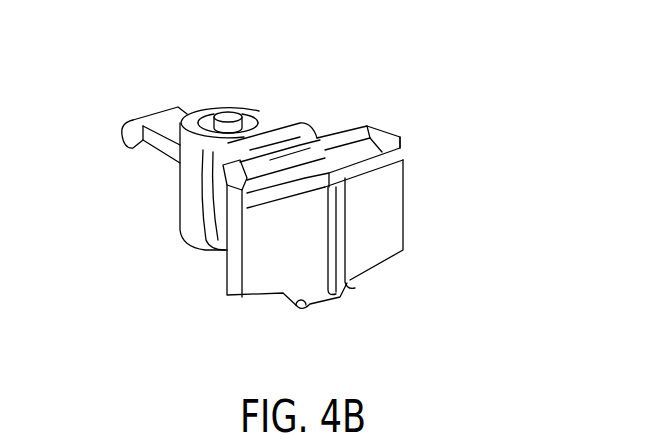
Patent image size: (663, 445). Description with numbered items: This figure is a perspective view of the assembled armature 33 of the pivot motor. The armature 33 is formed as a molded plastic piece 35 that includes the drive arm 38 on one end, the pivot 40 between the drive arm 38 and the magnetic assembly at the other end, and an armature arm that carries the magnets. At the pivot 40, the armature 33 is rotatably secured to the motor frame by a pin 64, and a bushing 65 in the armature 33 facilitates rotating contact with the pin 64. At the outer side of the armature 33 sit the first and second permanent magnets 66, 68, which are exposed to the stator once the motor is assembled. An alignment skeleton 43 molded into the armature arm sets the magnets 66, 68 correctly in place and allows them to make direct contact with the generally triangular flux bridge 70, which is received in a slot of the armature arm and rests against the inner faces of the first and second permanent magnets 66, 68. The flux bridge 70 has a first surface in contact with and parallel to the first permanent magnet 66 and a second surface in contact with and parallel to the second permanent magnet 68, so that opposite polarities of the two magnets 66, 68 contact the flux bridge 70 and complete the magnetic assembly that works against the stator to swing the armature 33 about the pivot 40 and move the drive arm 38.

The armature 33 is at (161, 229).
The molded plastic piece 35 is at (311, 124).
The drive arm 38 is at (150, 122).
The pivot 40 is at (178, 186).
The alignment skeleton 43 is at (405, 141).
The pin 64 is at (230, 118).
The bushing 65 is at (202, 129).
The first permanent magnet 66 is at (253, 297).
The second permanent magnet 68 is at (400, 208).
The flux bridge 70 is at (333, 151).